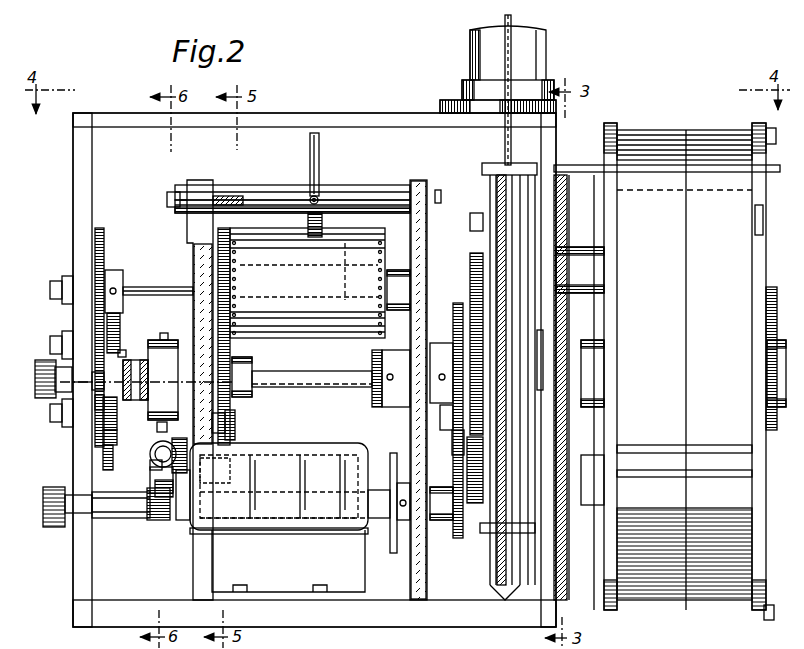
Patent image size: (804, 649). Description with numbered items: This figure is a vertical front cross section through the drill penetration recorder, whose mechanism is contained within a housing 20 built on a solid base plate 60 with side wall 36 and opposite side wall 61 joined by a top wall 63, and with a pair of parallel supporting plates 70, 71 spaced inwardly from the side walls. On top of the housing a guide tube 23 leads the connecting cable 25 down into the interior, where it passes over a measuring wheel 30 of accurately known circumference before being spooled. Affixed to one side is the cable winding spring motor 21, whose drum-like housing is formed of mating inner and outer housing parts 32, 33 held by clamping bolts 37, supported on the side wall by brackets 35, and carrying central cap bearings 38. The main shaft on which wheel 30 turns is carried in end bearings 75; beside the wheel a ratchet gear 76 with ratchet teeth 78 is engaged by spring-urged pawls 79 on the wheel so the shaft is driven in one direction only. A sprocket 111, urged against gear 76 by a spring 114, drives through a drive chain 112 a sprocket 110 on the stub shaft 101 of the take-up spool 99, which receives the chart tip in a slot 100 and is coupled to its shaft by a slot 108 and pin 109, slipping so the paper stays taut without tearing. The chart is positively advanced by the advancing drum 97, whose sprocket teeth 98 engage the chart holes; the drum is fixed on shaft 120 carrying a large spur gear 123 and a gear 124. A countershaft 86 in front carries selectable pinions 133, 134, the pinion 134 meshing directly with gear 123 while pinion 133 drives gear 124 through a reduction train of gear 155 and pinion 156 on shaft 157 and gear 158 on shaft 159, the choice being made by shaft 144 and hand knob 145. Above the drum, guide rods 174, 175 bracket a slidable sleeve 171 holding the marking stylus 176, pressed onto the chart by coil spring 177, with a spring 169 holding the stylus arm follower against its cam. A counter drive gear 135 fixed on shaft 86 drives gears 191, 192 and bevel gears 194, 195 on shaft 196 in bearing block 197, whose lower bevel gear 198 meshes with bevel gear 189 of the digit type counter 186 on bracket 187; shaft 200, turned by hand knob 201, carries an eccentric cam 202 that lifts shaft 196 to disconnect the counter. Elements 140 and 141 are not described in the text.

The housing 20 is at (97, 98).
The cable winding spring motor 21 is at (710, 155).
The guide tube 23 is at (480, 50).
The connecting line or cable 25 is at (512, 26).
The rotatable wheel 30 is at (490, 198).
The inner housing part 32 is at (642, 158).
The outer housing part 33 is at (733, 170).
The brackets 35 is at (588, 490).
The side wall 36 is at (562, 598).
The clamping bolts 37 is at (752, 228).
The side journal or cap bearings 38 is at (776, 352).
The base plate 60 is at (110, 610).
The side wall 61 is at (82, 180).
The top wall 63 is at (293, 118).
The supporting plate 70 is at (420, 573).
The supporting plate 71 is at (198, 270).
The end bearings 75 is at (540, 355).
The ratchet gear 76 is at (493, 390).
The ratchet teeth 78 is at (472, 270).
The pawls 79 is at (470, 228).
The countershaft 86 is at (302, 374).
The advancing drum 97 is at (257, 252).
The sprocket teeth 98 is at (236, 278).
The take-up reel or spool 99 is at (372, 533).
The slot 100 is at (368, 492).
The stub shaft 101 is at (402, 490).
The slot 108 is at (393, 545).
The pin 109 is at (405, 504).
The sprocket 110 is at (460, 498).
The sprocket 111 is at (458, 298).
The drive chain 112 is at (462, 438).
The spring 114 is at (455, 413).
The shaft 120 is at (136, 288).
The large spur gear 123 is at (150, 352).
The gear 124 is at (94, 243).
The spur or pinion gear 133 is at (98, 378).
The spur or pinion gear 134 is at (250, 392).
The counter drive gear 135 is at (240, 365).
The clutch 140 is at (178, 347).
The pin 141 is at (163, 428).
The shaft 144 is at (100, 400).
The hand knob 145 is at (44, 372).
The gear 155 is at (112, 450).
The pinion 156 is at (116, 435).
The shaft 157 is at (116, 415).
The gear 158 is at (116, 318).
The shaft 159 is at (122, 353).
The spring 169 is at (245, 194).
The slidable sleeve 171 is at (312, 198).
The guide rod 174 is at (350, 190).
The guide rod 175 is at (400, 213).
The marking stylus 176 is at (318, 165).
The coil spring 177 is at (328, 228).
The digit type counter 186 is at (280, 447).
The bracket 187 is at (195, 577).
The bevel gear 189 is at (180, 505).
The gear 191 is at (235, 428).
The gear 192 is at (228, 458).
The bevel gear 194 is at (186, 430).
The bevel gear 195 is at (160, 448).
The shaft 196 is at (150, 462).
The bearing block 197 is at (150, 476).
The bevel gear 198 is at (155, 488).
The shaft 200 is at (120, 512).
The hand knob 201 is at (48, 500).
The eccentric cam 202 is at (158, 520).